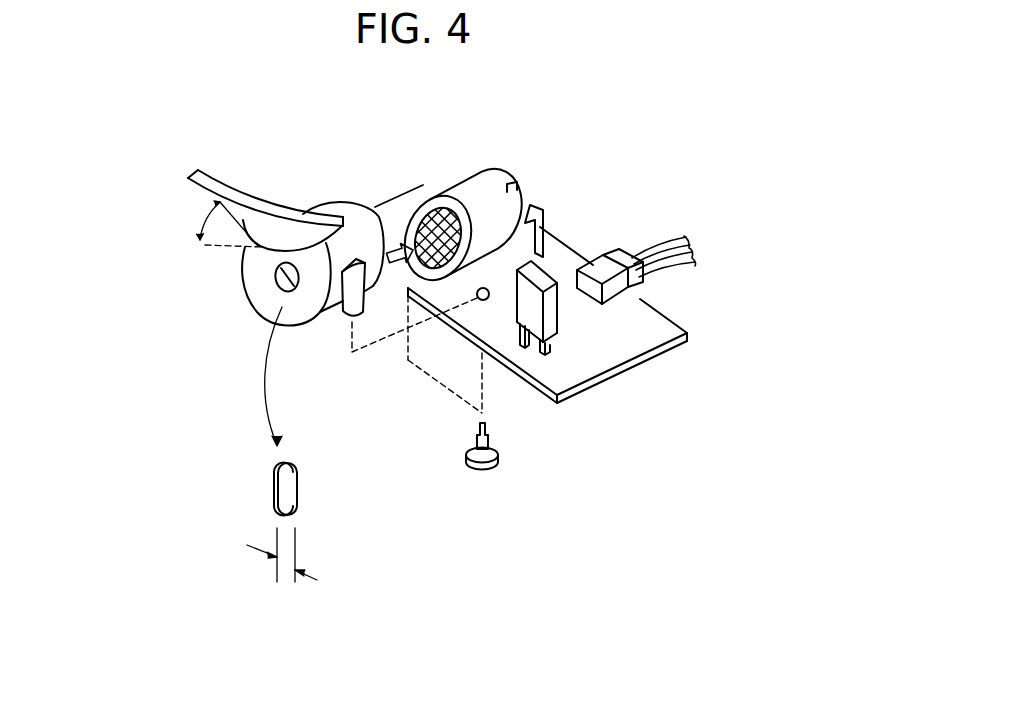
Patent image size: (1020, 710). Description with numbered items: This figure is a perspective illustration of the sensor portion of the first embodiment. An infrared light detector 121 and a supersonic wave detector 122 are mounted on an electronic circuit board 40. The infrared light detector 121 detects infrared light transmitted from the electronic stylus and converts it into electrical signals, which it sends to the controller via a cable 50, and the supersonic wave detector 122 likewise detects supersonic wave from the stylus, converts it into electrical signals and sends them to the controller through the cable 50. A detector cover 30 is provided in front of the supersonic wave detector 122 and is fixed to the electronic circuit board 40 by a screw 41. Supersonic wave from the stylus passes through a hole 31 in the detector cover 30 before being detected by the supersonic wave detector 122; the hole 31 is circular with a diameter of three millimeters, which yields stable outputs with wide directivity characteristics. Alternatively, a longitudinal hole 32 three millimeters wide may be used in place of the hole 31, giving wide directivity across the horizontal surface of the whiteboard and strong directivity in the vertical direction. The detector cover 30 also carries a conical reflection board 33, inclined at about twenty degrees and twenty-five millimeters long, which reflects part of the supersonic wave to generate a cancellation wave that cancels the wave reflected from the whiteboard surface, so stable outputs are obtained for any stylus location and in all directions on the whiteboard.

The detector cover 30 is at (302, 213).
The hole 31 is at (285, 293).
The longitudinal hole 32 is at (273, 480).
The conical reflection board 33 is at (250, 220).
The electronic circuit board 40 is at (653, 337).
The screw 41 is at (498, 457).
The cable 50 is at (677, 267).
The infrared light detector 121 is at (537, 273).
The supersonic wave detector 122 is at (473, 187).